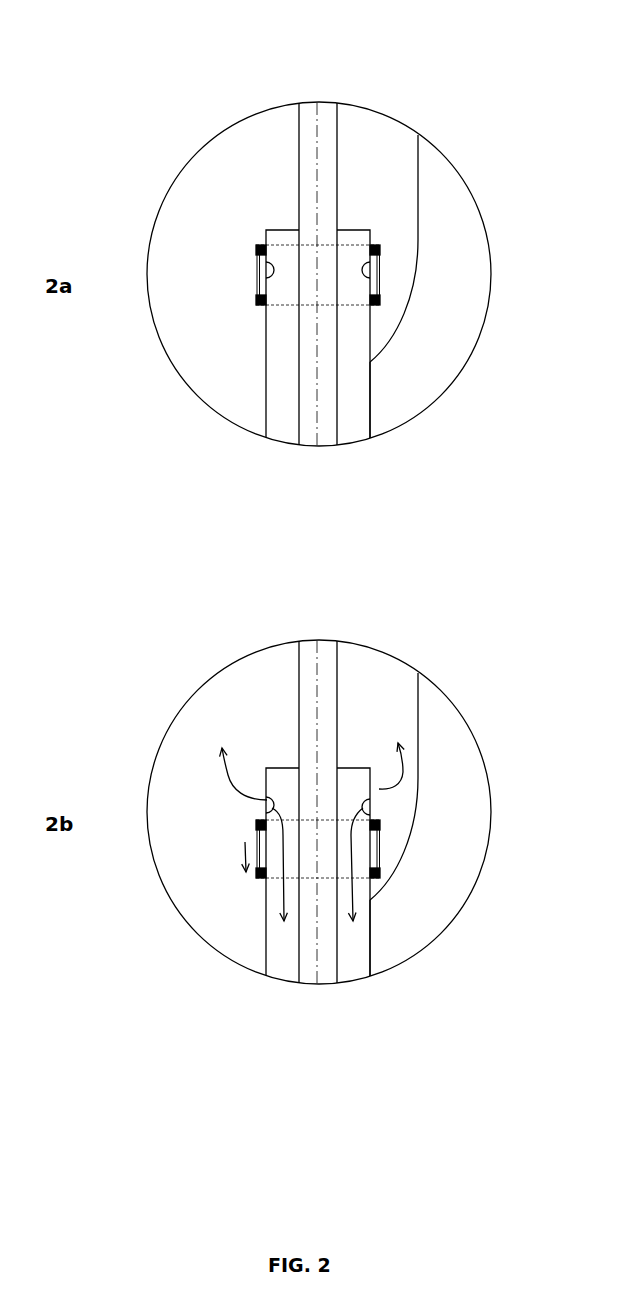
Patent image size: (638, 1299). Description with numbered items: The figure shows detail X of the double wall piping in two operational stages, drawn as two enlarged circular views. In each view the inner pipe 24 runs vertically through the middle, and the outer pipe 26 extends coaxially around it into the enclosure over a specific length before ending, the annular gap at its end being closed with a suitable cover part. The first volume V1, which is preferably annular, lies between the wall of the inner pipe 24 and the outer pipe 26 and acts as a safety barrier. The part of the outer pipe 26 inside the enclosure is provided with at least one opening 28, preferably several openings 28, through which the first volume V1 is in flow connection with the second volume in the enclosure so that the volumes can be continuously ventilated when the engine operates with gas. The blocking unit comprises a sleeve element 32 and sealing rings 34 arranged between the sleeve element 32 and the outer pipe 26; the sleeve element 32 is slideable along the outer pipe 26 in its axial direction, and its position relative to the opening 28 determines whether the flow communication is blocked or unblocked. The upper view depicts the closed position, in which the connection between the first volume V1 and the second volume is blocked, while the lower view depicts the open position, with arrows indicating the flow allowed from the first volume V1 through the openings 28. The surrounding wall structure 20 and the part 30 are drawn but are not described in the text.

The housing body 20 is at (385, 393).
The outer tube wall 24 is at (390, 432).
The inner tube 26 is at (338, 432).
The sealing element 28 is at (374, 281).
The collar 30 is at (378, 254).
The sealing ring 32 is at (251, 263).
The sealing lips 34 is at (258, 300).
The volume V1 is at (282, 402).
The detail section X is at (428, 142).